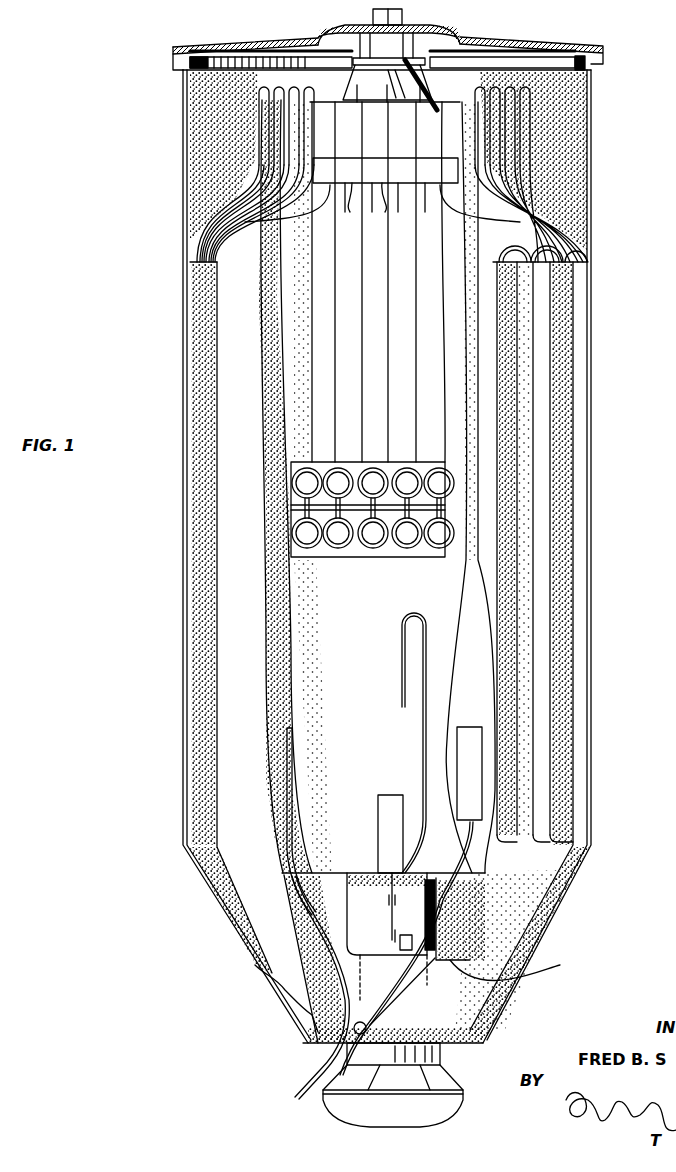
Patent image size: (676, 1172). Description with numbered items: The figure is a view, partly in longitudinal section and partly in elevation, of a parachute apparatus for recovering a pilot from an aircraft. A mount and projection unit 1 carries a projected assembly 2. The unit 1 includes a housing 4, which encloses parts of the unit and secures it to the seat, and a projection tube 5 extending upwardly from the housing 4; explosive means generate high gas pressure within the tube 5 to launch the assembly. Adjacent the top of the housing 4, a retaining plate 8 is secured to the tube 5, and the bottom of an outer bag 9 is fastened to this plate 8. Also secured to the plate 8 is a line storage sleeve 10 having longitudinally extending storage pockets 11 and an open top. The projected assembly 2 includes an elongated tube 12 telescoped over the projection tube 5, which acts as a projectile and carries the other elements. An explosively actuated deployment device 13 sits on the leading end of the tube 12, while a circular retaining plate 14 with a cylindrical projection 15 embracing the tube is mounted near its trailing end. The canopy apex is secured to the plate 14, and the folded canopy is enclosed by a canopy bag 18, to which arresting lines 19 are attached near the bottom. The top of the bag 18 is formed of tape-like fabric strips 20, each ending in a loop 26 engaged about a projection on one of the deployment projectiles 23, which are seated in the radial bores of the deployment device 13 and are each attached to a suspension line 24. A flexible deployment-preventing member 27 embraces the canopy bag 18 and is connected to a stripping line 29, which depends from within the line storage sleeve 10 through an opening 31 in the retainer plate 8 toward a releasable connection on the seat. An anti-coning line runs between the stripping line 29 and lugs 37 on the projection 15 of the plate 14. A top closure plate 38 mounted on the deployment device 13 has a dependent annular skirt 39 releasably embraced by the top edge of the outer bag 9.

The mount and projection unit 1 is at (302, 1117).
The projected assembly 2 is at (552, 193).
The housing 4 is at (355, 1117).
The projection tube 5 is at (420, 975).
The retaining plate 8 is at (367, 1028).
The outer bag 9 is at (589, 152).
The line storage sleeve 10 is at (255, 712).
The storage pockets 11 is at (195, 828).
The elongated tube 12 is at (393, 970).
The deployment device 13 is at (430, 112).
The retaining plate 14 is at (437, 885).
The cylindrical projection 15 is at (437, 910).
The canopy bag 18 is at (363, 609).
The arresting lines 19 is at (290, 752).
The fabric strips 20 is at (350, 316).
The deployment projectiles 23 is at (456, 115).
The suspension lines 24 is at (185, 222).
The loop 26 is at (380, 212).
The deployment-preventing member 27 is at (481, 131).
The stripping line 29 is at (313, 1071).
The opening 31 is at (347, 1060).
The lug 37 is at (402, 945).
The top closure plate 38 is at (533, 46).
The skirt 39 is at (577, 66).